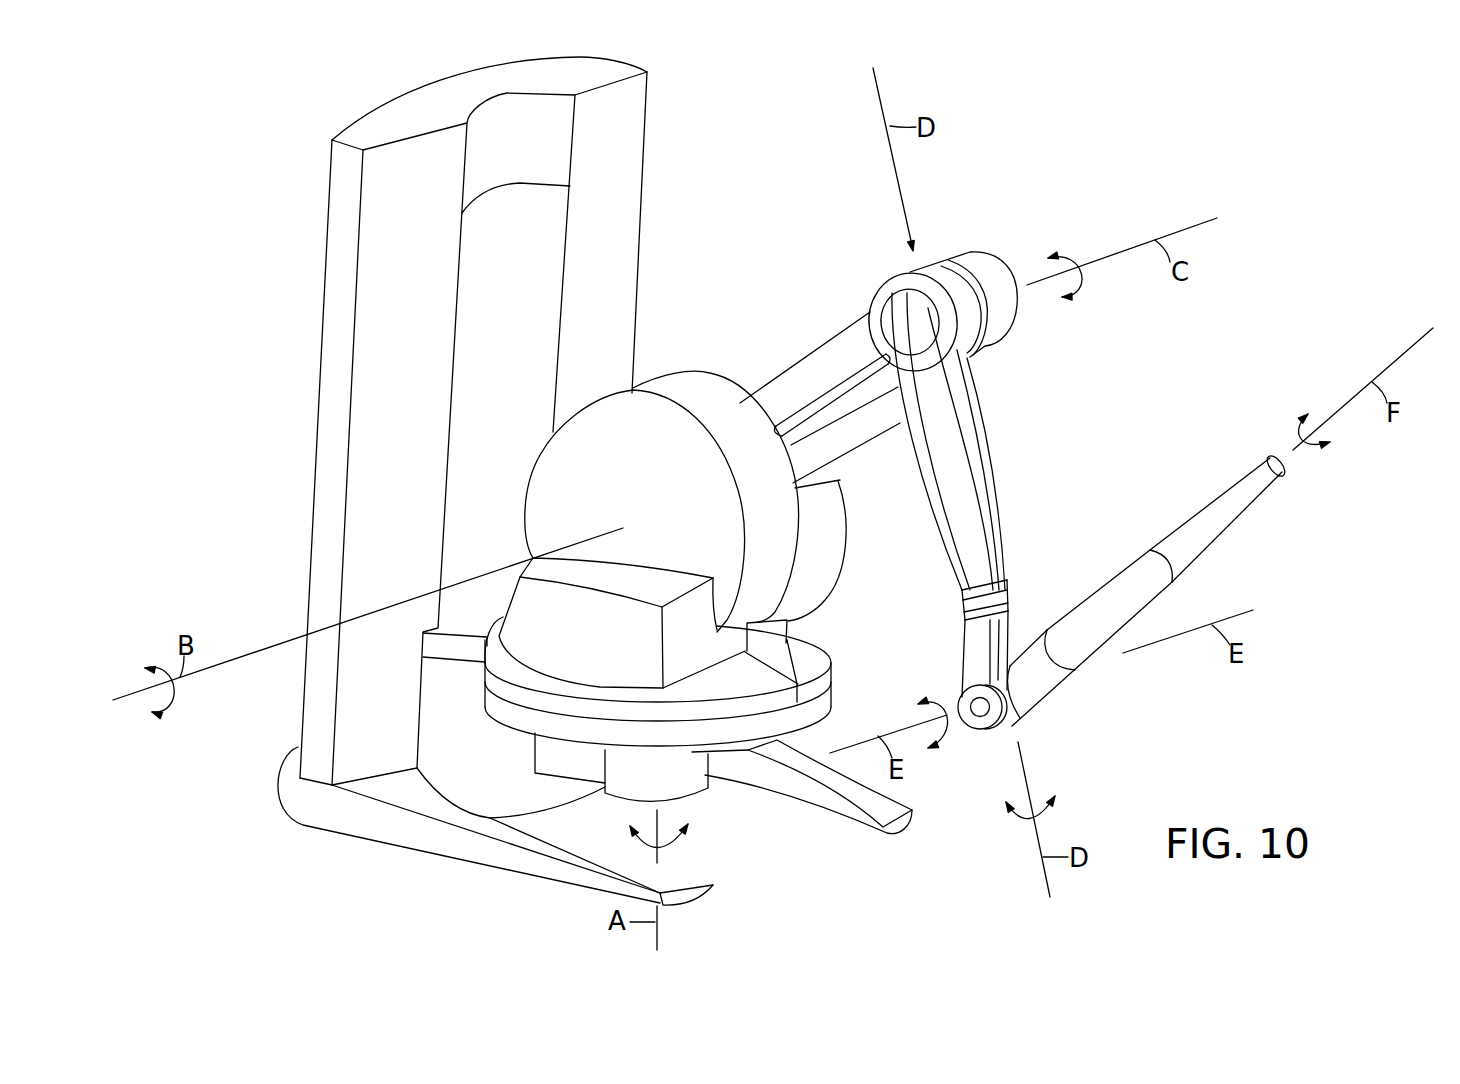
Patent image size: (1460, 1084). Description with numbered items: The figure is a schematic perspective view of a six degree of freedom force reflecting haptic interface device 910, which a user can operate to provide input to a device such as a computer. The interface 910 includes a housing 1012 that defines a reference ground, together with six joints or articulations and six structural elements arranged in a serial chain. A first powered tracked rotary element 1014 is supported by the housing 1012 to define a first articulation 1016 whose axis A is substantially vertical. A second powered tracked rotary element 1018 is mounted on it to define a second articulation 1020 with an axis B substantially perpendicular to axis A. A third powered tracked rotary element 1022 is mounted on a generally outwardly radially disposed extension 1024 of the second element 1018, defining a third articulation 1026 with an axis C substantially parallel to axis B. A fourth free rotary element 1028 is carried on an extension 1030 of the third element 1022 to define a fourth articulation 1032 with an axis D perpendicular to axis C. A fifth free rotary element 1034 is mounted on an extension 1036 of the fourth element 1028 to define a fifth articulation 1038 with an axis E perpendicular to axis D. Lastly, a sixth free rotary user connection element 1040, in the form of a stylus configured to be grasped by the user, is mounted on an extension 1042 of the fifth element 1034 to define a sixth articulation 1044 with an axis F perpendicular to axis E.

The force reflecting haptic interface device 910 is at (716, 135).
The housing 1012 is at (328, 139).
The first powered tracked rotary element 1014 is at (822, 635).
The first articulation 1016 is at (863, 675).
The second powered tracked rotary element 1018 is at (732, 373).
The second articulation 1020 is at (684, 356).
The third powered tracked rotary element 1022 is at (996, 254).
The extension of the second element 1024 is at (837, 337).
The third articulation 1026 is at (910, 259).
The fourth free rotary element 1028 is at (963, 619).
The extension of the third element 1030 is at (1000, 493).
The fourth articulation 1032 is at (1011, 581).
The fifth free rotary element 1034 is at (1062, 689).
The extension of the fourth element 1036 is at (963, 669).
The fifth articulation 1038 is at (1026, 723).
The sixth free rotary user connection element 1040 is at (1230, 517).
The extension of the fifth element 1042 is at (1045, 632).
The sixth articulation 1044 is at (1079, 672).